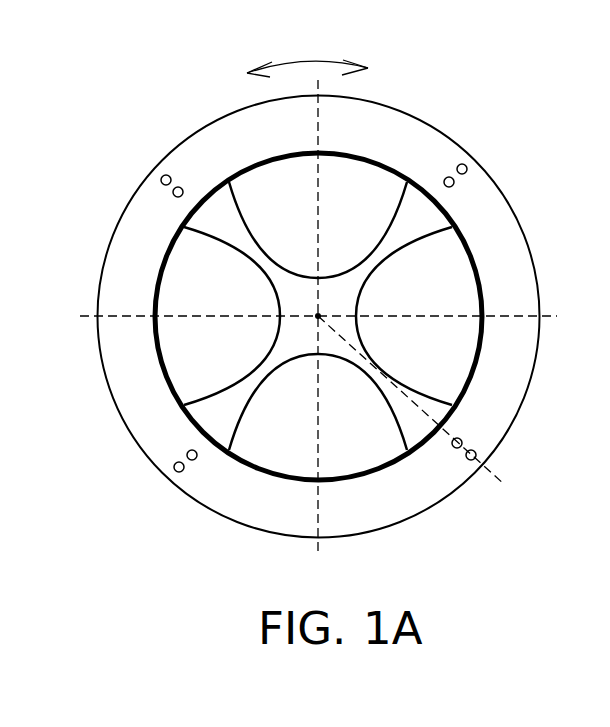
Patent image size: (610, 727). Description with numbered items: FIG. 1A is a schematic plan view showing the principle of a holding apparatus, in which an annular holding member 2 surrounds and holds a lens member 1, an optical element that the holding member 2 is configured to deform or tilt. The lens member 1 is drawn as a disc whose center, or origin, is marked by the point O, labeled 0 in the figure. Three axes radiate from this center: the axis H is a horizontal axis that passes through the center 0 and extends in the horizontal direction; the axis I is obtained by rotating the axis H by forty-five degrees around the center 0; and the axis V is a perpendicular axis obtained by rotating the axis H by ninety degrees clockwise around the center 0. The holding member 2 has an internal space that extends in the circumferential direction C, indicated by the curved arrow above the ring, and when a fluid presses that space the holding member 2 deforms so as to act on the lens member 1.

The lens member 1 is at (265, 197).
The holding member 2 is at (162, 427).
The axis H is at (334, 314).
The axis V is at (318, 334).
The axis I is at (418, 415).
The center O 0 is at (308, 301).
The circumferential direction C is at (307, 48).